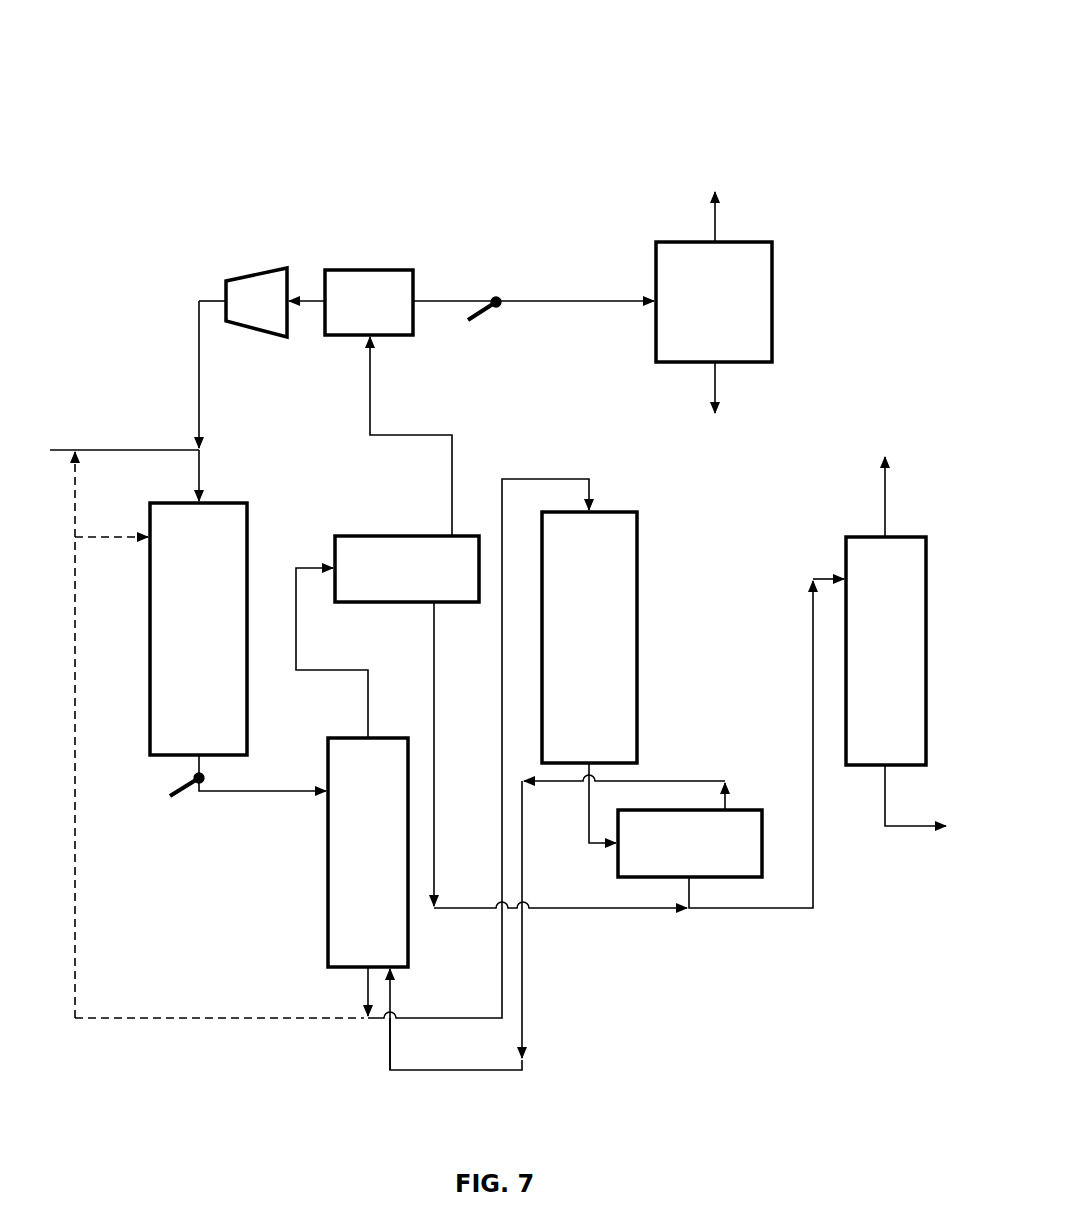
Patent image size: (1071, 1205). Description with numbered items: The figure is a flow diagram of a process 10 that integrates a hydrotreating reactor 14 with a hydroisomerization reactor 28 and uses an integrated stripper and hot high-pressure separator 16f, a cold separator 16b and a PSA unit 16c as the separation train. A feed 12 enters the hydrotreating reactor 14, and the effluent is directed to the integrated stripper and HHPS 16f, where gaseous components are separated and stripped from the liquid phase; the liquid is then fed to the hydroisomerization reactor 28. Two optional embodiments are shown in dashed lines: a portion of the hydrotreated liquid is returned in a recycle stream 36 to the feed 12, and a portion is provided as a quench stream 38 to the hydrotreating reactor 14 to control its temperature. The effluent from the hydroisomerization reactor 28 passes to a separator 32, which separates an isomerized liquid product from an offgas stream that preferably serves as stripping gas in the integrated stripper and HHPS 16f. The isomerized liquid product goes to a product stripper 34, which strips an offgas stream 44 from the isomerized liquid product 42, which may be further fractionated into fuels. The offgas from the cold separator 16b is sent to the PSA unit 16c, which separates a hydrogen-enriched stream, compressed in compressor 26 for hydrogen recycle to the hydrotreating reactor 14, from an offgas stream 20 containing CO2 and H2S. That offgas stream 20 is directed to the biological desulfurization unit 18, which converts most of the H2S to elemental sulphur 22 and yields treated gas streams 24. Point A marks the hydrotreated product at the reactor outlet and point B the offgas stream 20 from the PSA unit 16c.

The hydrocarbon processing system 10 is at (851, 91).
The feed 12 is at (106, 449).
The hydrotreating reactor 14 is at (150, 731).
The cold separator (CS) 16b is at (352, 536).
The PSA unit 16c is at (395, 270).
The integrated stripper and hot high-pressure separator (HHPS) 16f is at (326, 913).
The biological desulfurization unit 18 is at (772, 276).
The offgas stream 20 is at (558, 300).
The elemental sulphur 22 is at (718, 385).
The treated gas streams 24 is at (715, 222).
The compressor 26 is at (250, 278).
The hydroisomerization reactor 28 is at (636, 512).
The separator 32 is at (740, 810).
The product stripper 34 is at (846, 560).
The recycle stream 36 is at (78, 477).
The quench stream 38 is at (133, 538).
The isomerized liquid product 42 is at (925, 830).
The offgas stream 44 is at (885, 518).